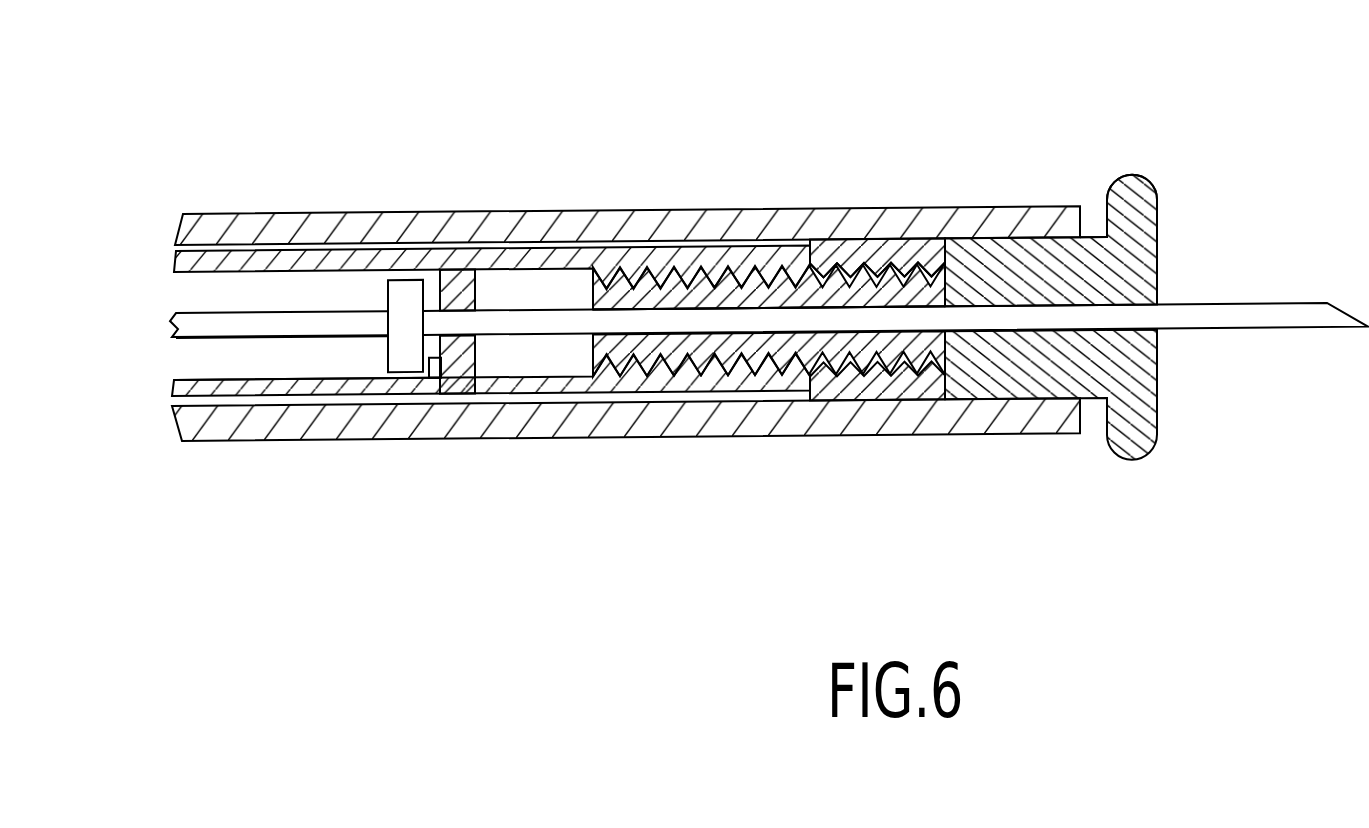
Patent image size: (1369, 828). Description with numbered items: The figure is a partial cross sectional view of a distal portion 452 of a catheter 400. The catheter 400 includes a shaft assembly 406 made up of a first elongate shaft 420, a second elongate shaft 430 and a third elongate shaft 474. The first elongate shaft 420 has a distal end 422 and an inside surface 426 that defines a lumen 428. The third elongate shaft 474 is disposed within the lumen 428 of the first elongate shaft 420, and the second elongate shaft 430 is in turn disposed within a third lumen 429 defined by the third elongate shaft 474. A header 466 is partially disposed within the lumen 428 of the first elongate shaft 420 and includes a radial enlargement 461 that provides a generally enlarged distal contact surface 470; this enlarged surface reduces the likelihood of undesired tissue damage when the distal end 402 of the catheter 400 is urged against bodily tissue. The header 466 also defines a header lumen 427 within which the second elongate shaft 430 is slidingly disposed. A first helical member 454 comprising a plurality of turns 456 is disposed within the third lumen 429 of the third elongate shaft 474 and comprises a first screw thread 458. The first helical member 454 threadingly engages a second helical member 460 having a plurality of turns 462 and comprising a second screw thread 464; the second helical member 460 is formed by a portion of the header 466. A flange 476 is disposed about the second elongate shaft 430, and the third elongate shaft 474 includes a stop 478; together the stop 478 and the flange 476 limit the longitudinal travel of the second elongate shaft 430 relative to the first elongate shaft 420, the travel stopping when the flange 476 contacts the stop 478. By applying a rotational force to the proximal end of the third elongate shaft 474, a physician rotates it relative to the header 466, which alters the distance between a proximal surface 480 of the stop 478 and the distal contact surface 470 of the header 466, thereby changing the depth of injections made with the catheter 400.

The catheter 400 is at (711, 380).
The distal end 402 is at (1119, 373).
The shaft assembly 406 is at (626, 298).
The first elongate shaft 420 is at (363, 224).
The distal end 422 is at (1071, 186).
The inside surface 426 is at (220, 414).
The header lumen 427 is at (1122, 332).
The lumen 428 is at (280, 404).
The third lumen 429 is at (195, 363).
The second elongate shaft 430 is at (213, 326).
The distal portion 452 is at (724, 420).
The first helical member 454 is at (590, 281).
The turns 456 is at (649, 306).
The first screw thread 458 is at (590, 359).
The second helical member 460 is at (879, 203).
The radial enlargement 461 is at (1138, 174).
The turns 462 is at (912, 274).
The second screw thread 464 is at (870, 374).
The header 466 is at (1130, 243).
The distal contact surface 470 is at (1163, 267).
The third elongate shaft 474 is at (417, 260).
The flange 476 is at (390, 295).
The stop 478 is at (473, 368).
The proximal surface 480 is at (433, 382).